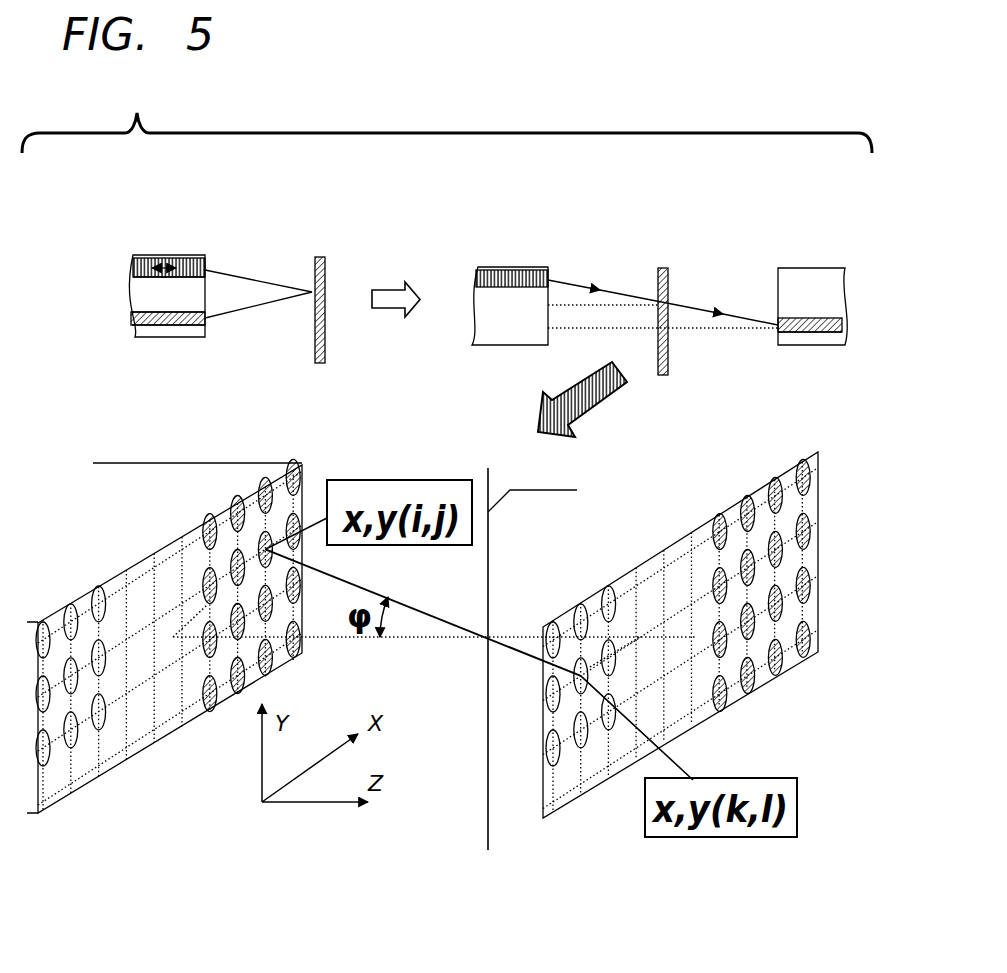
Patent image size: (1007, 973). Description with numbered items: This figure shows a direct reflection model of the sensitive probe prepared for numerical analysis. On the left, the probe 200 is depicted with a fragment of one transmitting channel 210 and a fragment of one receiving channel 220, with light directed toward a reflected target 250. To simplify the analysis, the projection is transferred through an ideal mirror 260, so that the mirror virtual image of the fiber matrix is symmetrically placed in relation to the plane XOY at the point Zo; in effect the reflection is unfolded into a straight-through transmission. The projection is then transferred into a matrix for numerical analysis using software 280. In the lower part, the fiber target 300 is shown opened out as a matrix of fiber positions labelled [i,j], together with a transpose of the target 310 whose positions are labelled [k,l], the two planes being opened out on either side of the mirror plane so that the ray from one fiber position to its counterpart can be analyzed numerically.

The probe 200 is at (126, 300).
The transmitting channel 210 is at (132, 270).
The receiving channel 220 is at (150, 322).
The reflected target 250 is at (325, 352).
The ideal mirror 260 is at (696, 280).
The software 280 is at (622, 486).
The fiber target 300 is at (92, 752).
The transpose of the target 310 is at (868, 648).